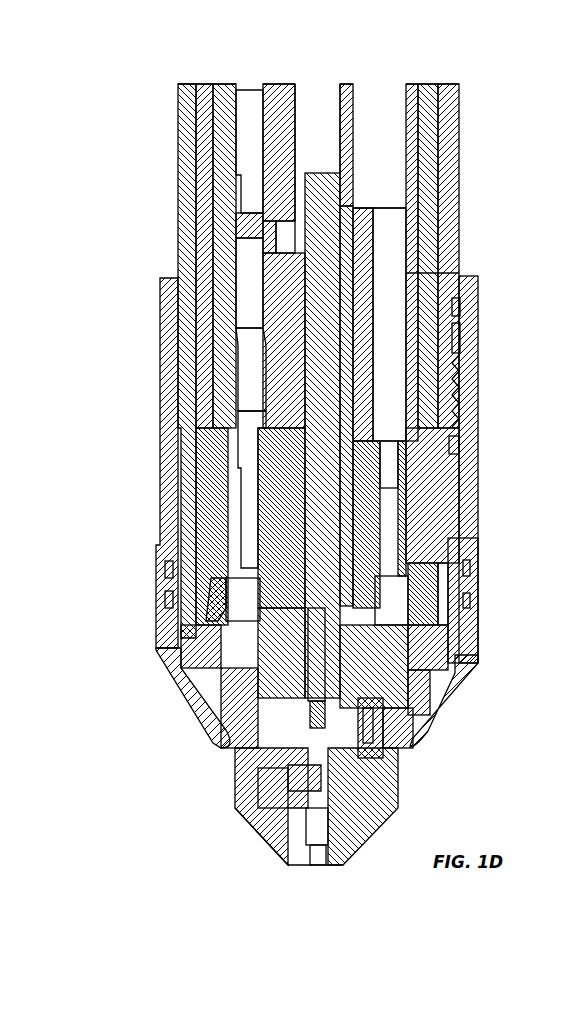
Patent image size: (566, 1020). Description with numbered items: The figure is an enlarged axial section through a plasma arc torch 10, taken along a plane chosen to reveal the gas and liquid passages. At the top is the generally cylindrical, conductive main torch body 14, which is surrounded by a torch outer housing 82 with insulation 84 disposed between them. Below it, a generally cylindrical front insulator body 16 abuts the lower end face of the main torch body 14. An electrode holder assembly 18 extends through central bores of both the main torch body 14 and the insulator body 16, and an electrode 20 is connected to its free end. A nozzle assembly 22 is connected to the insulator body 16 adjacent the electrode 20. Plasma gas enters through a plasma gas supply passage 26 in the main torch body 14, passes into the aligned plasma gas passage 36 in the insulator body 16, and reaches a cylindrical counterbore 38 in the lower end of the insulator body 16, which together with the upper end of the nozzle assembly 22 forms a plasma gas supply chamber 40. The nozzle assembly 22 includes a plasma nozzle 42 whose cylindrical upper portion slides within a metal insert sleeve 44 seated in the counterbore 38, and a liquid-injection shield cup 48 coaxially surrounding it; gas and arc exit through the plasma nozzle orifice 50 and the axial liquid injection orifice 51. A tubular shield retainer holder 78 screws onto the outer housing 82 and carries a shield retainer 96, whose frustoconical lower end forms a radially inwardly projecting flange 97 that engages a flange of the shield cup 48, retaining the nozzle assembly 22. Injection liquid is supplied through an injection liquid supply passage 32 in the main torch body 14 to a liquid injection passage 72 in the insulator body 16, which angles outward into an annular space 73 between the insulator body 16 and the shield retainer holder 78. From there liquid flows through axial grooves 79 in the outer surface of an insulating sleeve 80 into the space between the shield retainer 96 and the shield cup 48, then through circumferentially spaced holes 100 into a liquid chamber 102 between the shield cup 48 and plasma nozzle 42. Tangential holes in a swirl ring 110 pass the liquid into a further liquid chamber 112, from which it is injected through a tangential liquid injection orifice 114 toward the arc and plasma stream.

The plasma arc torch 10 is at (100, 266).
The main torch body 14 is at (215, 150).
The front insulator body 16 is at (405, 508).
The electrode holder assembly 18 is at (272, 488).
The electrode 20 is at (232, 737).
The nozzle assembly 22 is at (245, 800).
The plasma gas supply passage 26 is at (238, 258).
The injection liquid supply passage 32 is at (385, 233).
The plasma gas passage 36 is at (240, 368).
The cylindrical counterbore 38 is at (237, 583).
The plasma gas supply chamber 40 is at (388, 592).
The plasma nozzle 42 is at (335, 822).
The metal insert sleeve 44 is at (212, 633).
The liquid-injection shield cup 48 is at (380, 800).
The plasma nozzle orifice 50 is at (305, 820).
The axial liquid injection orifice 51 is at (318, 850).
The liquid injection passage 72 is at (385, 357).
The annular space 73 is at (445, 437).
The shield retainer holder 78 is at (458, 300).
The axial grooves 79 is at (162, 517).
The insulating sleeve 80 is at (435, 637).
The torch outer housing 82 is at (432, 180).
The insulation 84 is at (402, 265).
The shield retainer 96 is at (455, 665).
The radially inwardly projecting flange 97 is at (400, 740).
The circumferentially spaced holes 100 is at (205, 712).
The liquid chamber 102 is at (360, 712).
The swirl ring 110 is at (370, 760).
The liquid chamber 112 is at (265, 808).
The tangential liquid injection orifice 114 is at (290, 858).